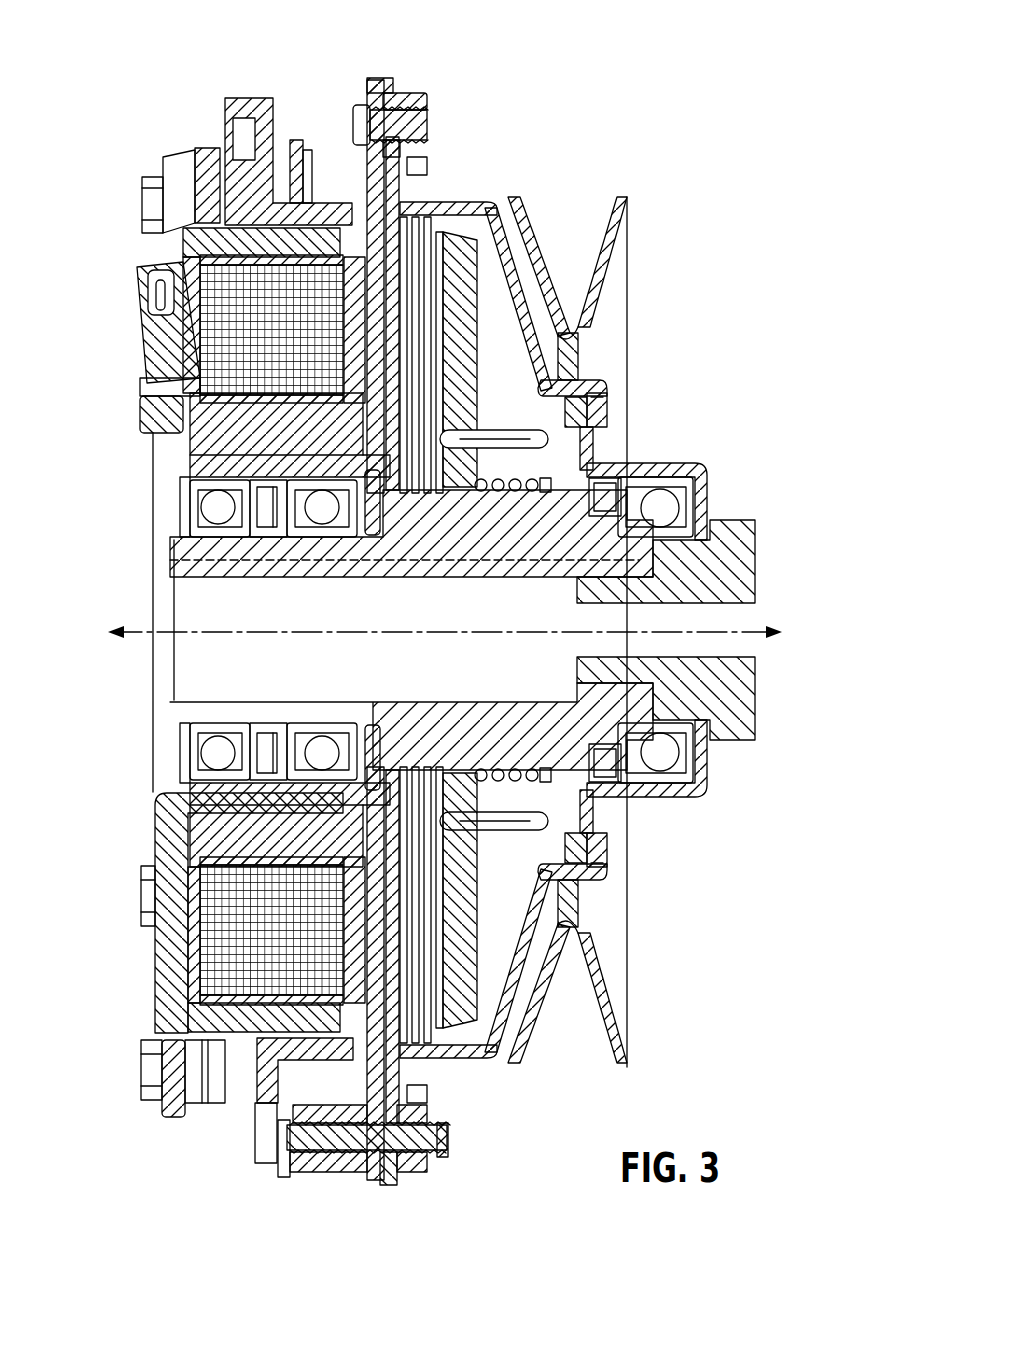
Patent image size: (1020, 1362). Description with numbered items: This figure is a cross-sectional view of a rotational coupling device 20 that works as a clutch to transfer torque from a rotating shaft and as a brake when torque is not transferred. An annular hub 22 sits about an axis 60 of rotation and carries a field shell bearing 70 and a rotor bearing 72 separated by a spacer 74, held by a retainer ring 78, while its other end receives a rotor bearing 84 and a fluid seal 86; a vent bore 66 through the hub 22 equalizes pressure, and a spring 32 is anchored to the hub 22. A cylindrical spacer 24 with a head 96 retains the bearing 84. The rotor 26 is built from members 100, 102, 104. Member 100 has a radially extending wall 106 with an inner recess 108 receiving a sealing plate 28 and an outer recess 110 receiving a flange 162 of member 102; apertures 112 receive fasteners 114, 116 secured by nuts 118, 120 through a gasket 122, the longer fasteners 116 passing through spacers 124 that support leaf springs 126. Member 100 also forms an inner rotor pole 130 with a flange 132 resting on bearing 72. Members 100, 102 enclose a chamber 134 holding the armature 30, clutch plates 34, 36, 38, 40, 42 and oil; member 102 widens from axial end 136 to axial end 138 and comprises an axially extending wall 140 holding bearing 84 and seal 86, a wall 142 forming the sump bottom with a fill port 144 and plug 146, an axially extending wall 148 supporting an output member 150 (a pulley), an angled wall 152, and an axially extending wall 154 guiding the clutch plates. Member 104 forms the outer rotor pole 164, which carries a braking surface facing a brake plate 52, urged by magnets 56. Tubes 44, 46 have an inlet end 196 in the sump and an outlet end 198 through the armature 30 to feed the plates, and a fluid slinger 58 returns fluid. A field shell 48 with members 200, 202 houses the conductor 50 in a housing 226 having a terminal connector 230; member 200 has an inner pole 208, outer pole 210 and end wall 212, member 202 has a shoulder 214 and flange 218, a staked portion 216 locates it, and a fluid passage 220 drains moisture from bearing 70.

The rotational coupling device 20 is at (123, 150).
The hub 22 is at (390, 552).
The spacer 24 is at (738, 686).
The rotor 26 is at (488, 178).
The sealing plate 28 is at (392, 337).
The armature 30 is at (493, 252).
The spring 32 is at (548, 482).
The clutch plate 34 is at (430, 1075).
The clutch plate 36 is at (440, 1050).
The clutch plate 38 is at (450, 1040).
The clutch plate 40 is at (470, 1000).
The clutch plate 42 is at (512, 985).
The tube 44 is at (590, 800).
The tube 46 is at (622, 368).
The field shell 48 is at (144, 983).
The conductor 50 is at (195, 1001).
The brake plate 52 is at (250, 100).
The magnet 56 is at (240, 128).
The fluid slinger 58 is at (390, 710).
The axis 60 is at (135, 633).
The vent bore 66 is at (358, 712).
The field shell bearing 70 is at (237, 730).
The rotor bearing 72 is at (300, 730).
The spacer 74 is at (270, 730).
The retainer ring 78 is at (167, 529).
The rotor bearing 84 is at (690, 487).
The fluid seal 86 is at (612, 498).
The head 96 is at (735, 580).
The member 100 is at (372, 1177).
The member 102 is at (428, 1175).
The member 104 is at (257, 1153).
The wall 106 is at (437, 205).
The inner recess 108 is at (455, 292).
The outer recess 110 is at (402, 95).
The apertures 112 is at (330, 1153).
The fastener 114 is at (355, 108).
The fastener 116 is at (270, 1157).
The nut 118 is at (418, 100).
The nut 120 is at (447, 1163).
The gasket 122 is at (395, 1110).
The spacer 124 is at (317, 1163).
The leaf spring 126 is at (257, 1090).
The inner rotor pole 130 is at (320, 465).
The flange 132 is at (293, 477).
The chamber 134 is at (550, 927).
The axial end 136 is at (716, 797).
The axial end 138 is at (410, 1187).
The axially extending wall 140 is at (682, 795).
The wall 142 is at (587, 850).
The fill port 144 is at (588, 400).
The plug 146 is at (603, 387).
The axially extending wall 148 is at (567, 877).
The output member 150 is at (620, 993).
The wall 152 is at (620, 1028).
The axially extending wall 154 is at (493, 205).
The flange 162 is at (395, 150).
The outer rotor pole 164 is at (317, 210).
The end 196 is at (522, 460).
The end 198 is at (457, 424).
The member 200 is at (130, 406).
The member 202 is at (227, 833).
The inner pole 208 is at (181, 789).
The outer pole 210 is at (160, 1040).
The end wall 212 is at (163, 945).
The shoulder 214 is at (258, 436).
The portion 216 is at (191, 466).
The flange 218 is at (395, 553).
The fluid passage 220 is at (165, 432).
The housing 226 is at (190, 961).
The terminal connector 230 is at (156, 340).